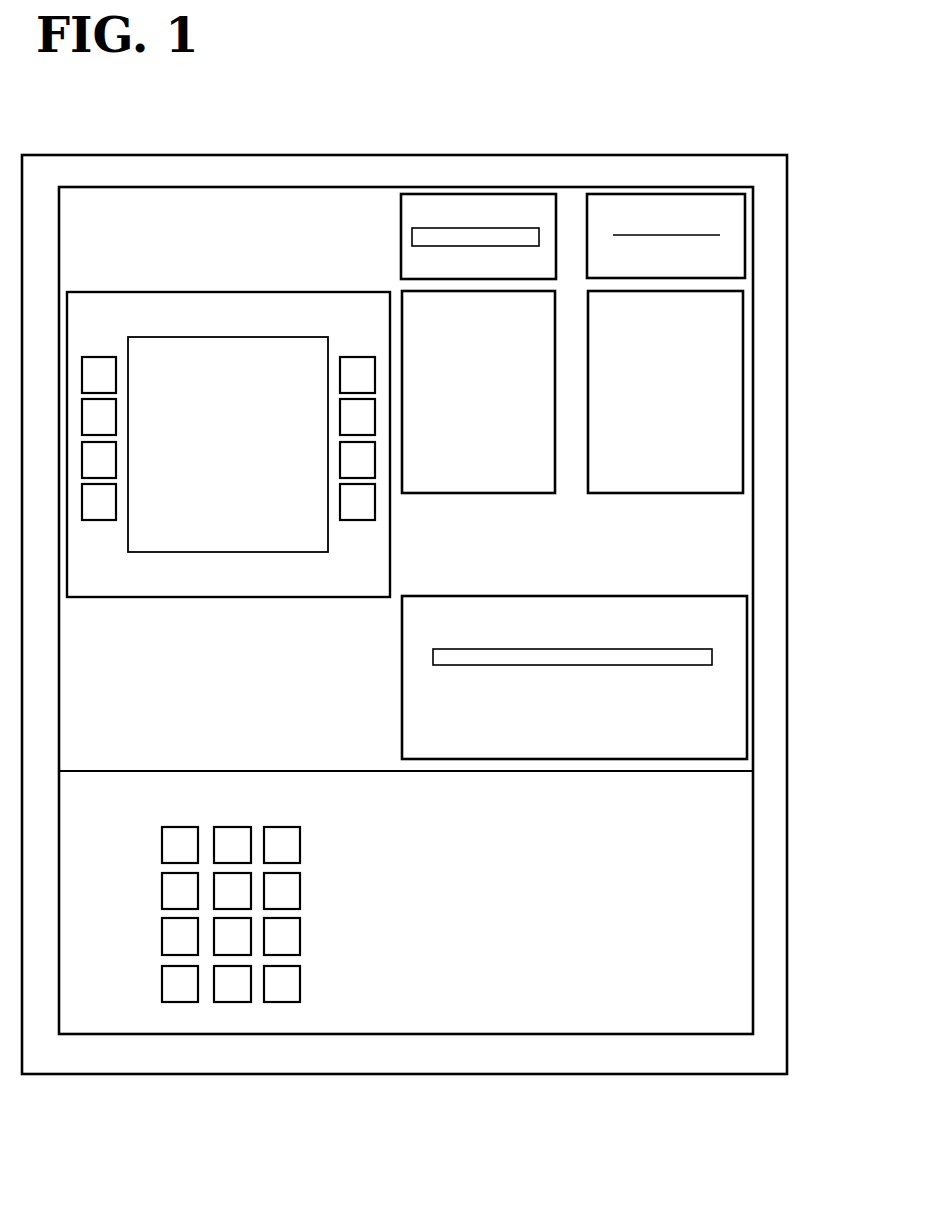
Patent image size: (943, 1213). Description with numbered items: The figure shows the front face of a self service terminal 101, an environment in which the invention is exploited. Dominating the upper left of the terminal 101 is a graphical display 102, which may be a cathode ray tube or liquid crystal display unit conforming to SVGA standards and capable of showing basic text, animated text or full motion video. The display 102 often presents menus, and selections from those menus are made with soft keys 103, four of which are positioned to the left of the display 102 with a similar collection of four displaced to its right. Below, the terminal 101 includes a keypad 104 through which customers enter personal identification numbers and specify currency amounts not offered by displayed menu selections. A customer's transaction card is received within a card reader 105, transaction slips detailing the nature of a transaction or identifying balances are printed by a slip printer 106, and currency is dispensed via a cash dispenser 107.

The self service terminal 101 is at (708, 1050).
The graphical display 102 is at (218, 365).
The soft keys 103 is at (358, 372).
The keypad 104 is at (180, 930).
The card reader 105 is at (515, 212).
The slip printer 106 is at (687, 213).
The cash dispenser 107 is at (713, 722).